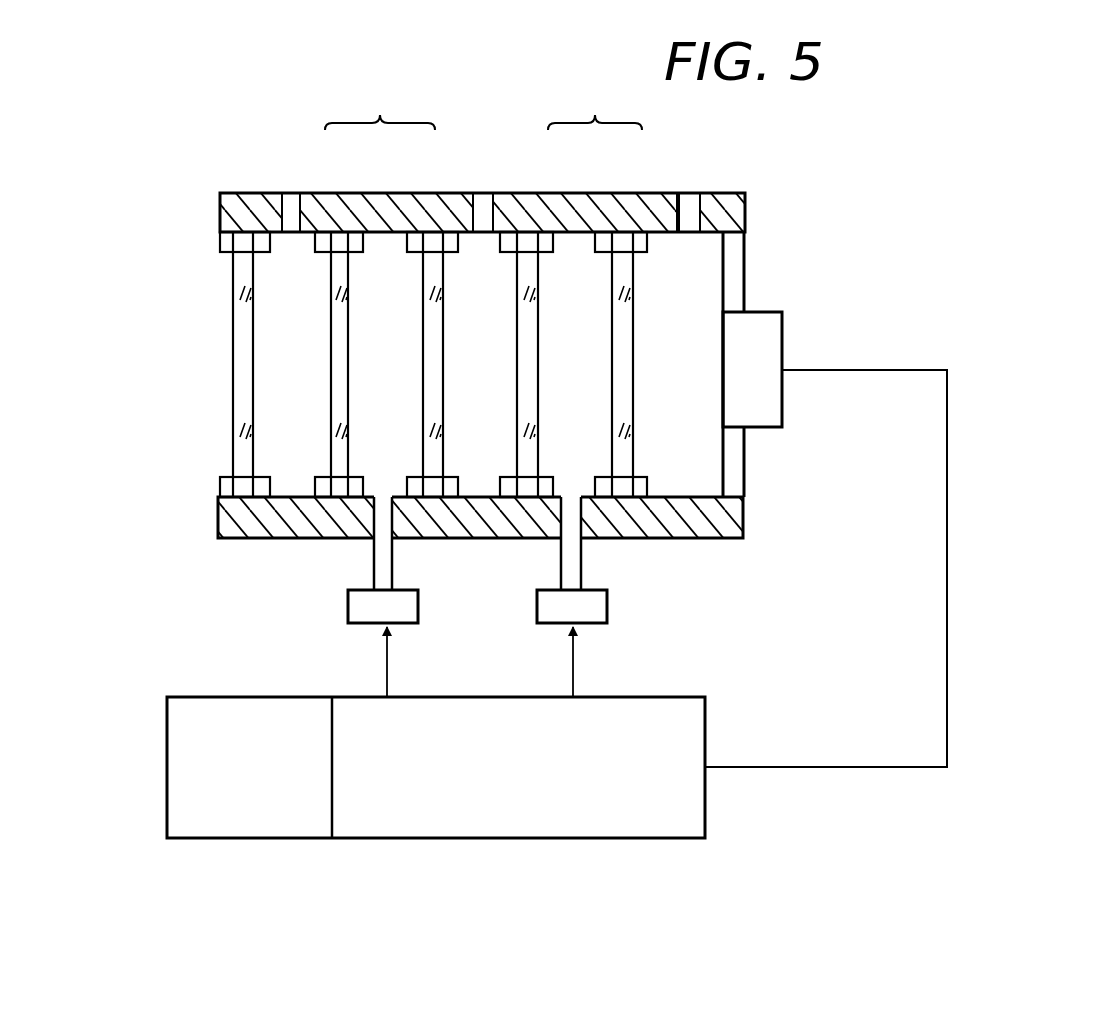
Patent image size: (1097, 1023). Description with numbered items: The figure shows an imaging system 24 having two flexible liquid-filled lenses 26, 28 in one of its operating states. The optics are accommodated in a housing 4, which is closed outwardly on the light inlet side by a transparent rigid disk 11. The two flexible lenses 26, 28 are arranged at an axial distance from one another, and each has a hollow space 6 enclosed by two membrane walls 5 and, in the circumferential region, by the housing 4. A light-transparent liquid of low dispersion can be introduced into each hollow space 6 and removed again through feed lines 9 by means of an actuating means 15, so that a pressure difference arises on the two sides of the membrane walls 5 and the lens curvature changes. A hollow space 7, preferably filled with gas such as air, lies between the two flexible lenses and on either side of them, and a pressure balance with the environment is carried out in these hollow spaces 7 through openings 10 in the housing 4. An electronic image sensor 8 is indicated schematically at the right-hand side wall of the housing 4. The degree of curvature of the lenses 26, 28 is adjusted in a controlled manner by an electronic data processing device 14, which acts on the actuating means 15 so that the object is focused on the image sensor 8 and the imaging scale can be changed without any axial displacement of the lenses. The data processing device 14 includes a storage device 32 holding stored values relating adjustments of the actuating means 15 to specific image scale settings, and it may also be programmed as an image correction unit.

The housing 4 is at (236, 211).
The membrane walls 5 is at (352, 212).
The hollow space 6 is at (380, 462).
The hollow space 7 is at (282, 358).
The electronic image sensor 8 is at (768, 406).
The feed lines 9 is at (384, 575).
The openings 10 is at (292, 212).
The transparent rigid disk 11 is at (247, 447).
The electronic data processing device 14 is at (704, 700).
The actuating means 15 is at (351, 626).
The imaging system 24 is at (774, 228).
The flexible liquid-filled lens 26 is at (380, 103).
The flexible liquid-filled lens 28 is at (595, 103).
The storage device 32 is at (173, 710).